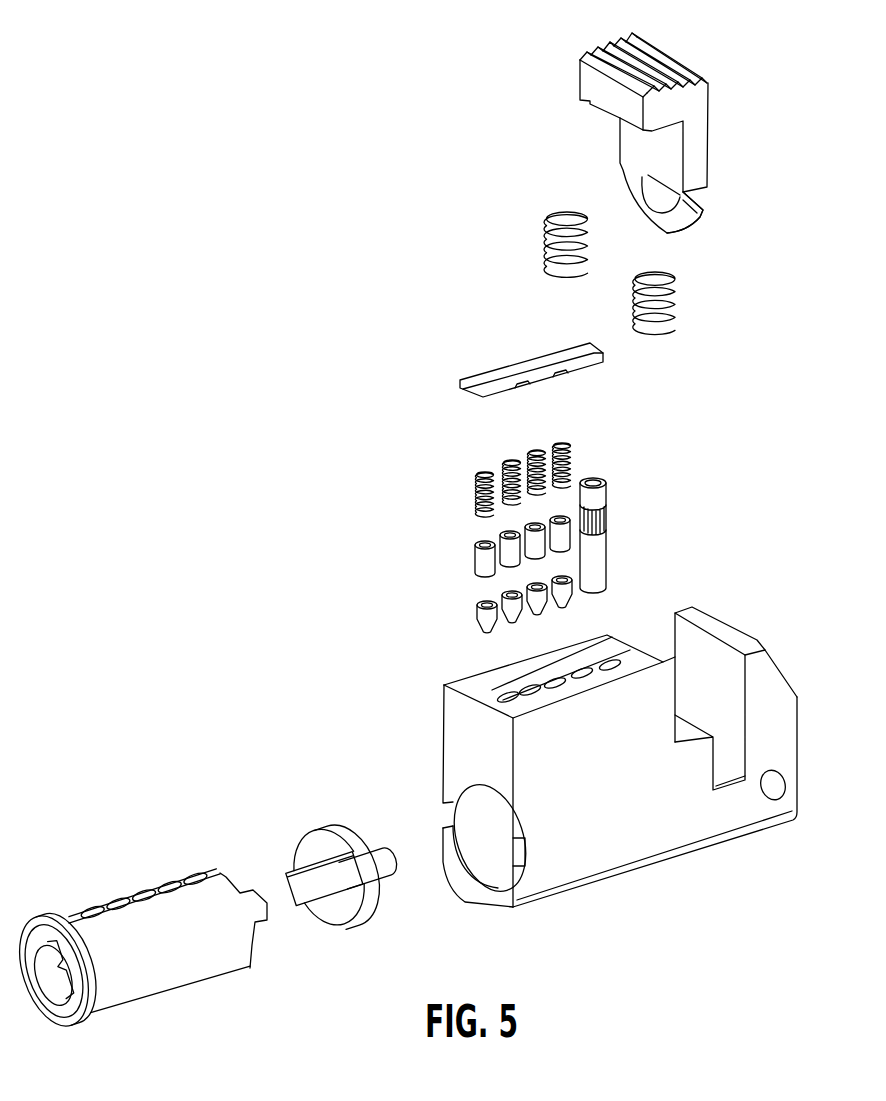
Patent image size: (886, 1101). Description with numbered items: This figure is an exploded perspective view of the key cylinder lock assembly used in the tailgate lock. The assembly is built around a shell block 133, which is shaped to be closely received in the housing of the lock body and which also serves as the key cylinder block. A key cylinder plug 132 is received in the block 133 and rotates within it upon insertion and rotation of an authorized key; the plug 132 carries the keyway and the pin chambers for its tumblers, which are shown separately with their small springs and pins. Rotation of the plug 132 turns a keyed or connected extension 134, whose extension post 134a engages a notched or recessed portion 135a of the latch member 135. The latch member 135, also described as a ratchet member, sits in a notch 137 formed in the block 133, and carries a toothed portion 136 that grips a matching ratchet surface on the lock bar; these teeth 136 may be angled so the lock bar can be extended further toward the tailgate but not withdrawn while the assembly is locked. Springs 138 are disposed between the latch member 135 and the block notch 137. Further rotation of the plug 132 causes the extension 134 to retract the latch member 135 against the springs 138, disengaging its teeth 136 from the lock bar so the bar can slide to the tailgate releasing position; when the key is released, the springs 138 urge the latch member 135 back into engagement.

The key cylinder plug 132 is at (185, 985).
The shell block 133 is at (643, 770).
The extension 134 is at (303, 840).
The extension post 134a is at (390, 840).
The latch member 135 is at (697, 130).
The notched or recessed portion 135a is at (693, 206).
The toothed portion 136 is at (653, 65).
The notch 137 is at (723, 778).
The springs 138 is at (547, 240).